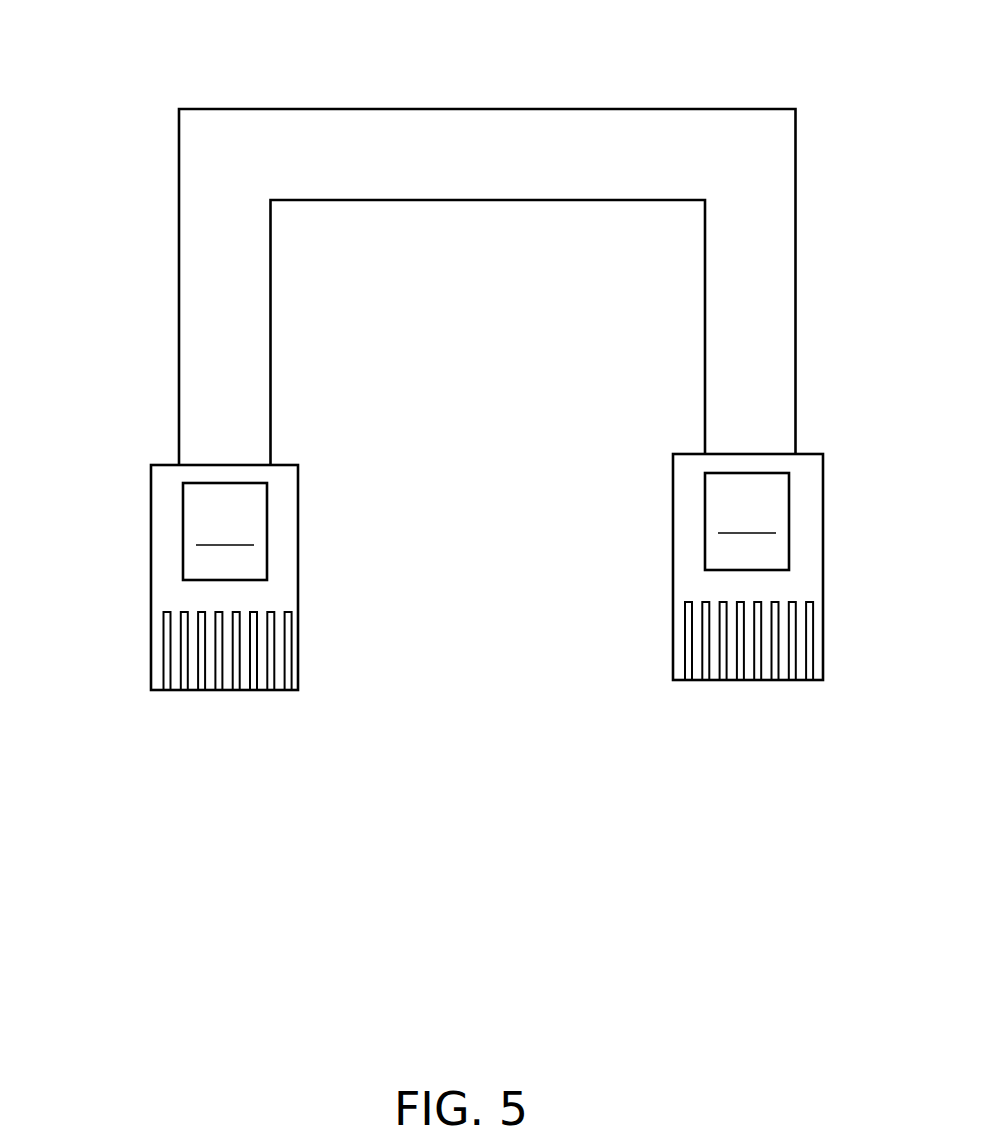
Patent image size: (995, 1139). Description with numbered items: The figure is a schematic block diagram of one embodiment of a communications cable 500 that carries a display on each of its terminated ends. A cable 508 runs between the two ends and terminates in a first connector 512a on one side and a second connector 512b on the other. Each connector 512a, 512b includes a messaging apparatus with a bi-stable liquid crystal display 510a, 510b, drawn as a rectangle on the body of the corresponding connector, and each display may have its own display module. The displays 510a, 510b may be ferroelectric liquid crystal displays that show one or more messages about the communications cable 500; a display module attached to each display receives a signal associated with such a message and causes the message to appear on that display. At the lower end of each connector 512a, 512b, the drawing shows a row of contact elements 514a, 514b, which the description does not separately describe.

The communications cable 500 is at (104, 54).
The cable 508 is at (371, 106).
The bi-stable liquid crystal display 510a is at (225, 531).
The bi-stable liquid crystal display 510b is at (747, 521).
The first connector 512a is at (300, 464).
The second connector 512b is at (824, 452).
The first connector contacts 514a is at (290, 607).
The second connector contacts 514b is at (813, 598).